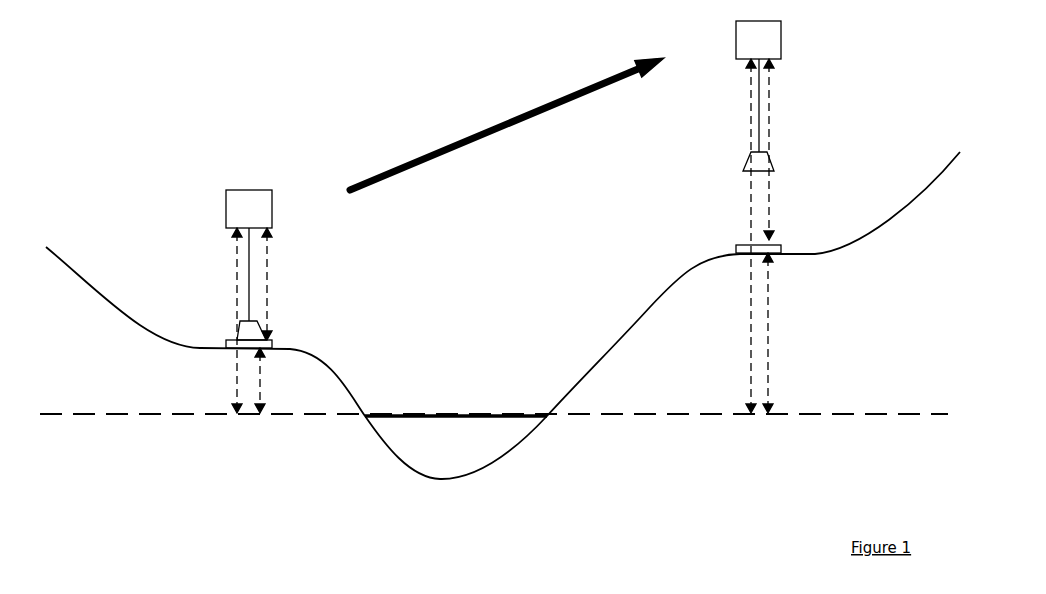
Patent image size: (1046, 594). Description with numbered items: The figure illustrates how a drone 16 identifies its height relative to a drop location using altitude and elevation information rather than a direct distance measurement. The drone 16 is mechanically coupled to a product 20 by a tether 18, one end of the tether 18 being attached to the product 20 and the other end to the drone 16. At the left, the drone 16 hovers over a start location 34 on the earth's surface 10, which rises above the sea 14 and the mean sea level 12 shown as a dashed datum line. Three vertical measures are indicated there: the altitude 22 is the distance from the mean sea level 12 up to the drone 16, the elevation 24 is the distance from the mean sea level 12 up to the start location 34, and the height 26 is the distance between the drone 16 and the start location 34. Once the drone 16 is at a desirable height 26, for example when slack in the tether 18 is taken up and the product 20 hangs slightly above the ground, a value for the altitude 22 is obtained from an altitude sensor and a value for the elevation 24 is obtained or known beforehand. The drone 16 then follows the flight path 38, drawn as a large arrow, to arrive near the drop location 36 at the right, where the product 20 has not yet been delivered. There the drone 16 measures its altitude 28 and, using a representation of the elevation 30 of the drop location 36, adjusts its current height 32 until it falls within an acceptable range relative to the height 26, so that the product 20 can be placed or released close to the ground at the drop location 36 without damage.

The earth's surface 10 is at (84, 285).
The mean sea level 12 is at (130, 413).
The sea 14 is at (459, 429).
The drone 16 is at (226, 204).
The tether 18 is at (248, 269).
The product 20 is at (245, 333).
The altitude 22 is at (236, 291).
The elevation 24 is at (262, 381).
The height 26 is at (268, 277).
The altitude 28 is at (750, 124).
The elevation 30 is at (768, 319).
The height 32 is at (770, 190).
The start location 34 is at (273, 346).
The drop location 36 is at (741, 248).
The flight path 38 is at (478, 130).